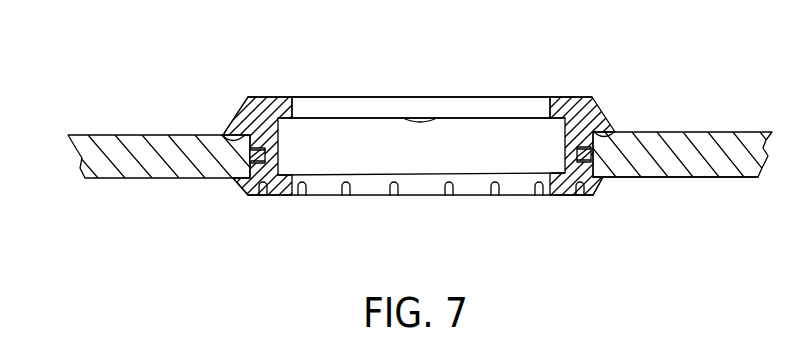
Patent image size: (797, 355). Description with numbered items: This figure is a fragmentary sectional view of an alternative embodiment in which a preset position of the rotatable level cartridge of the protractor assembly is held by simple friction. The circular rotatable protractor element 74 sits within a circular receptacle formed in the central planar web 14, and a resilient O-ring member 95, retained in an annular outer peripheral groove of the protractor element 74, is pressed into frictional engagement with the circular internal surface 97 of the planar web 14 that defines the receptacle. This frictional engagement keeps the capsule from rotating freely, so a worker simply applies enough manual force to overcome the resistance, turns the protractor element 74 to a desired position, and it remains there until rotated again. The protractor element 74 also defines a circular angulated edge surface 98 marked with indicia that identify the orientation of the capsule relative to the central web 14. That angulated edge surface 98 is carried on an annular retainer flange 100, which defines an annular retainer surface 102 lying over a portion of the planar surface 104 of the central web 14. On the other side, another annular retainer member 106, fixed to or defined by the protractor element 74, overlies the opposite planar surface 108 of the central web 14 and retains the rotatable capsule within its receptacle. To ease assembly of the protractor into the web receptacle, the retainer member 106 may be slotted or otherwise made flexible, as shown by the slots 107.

The planar web 14 is at (105, 158).
The rotatable protractor element 74 is at (571, 97).
The resilient O-ring member 95 is at (590, 128).
The circular internal surface 97 is at (580, 197).
The angulated edge surface 98 is at (248, 99).
The annular retainer flange 100 is at (238, 127).
The annular retainer surface 102 is at (225, 136).
The planar surface 104 is at (717, 131).
The annular retainer member 106 is at (240, 183).
The slots 107 is at (346, 197).
The opposite planar surface 108 is at (684, 178).